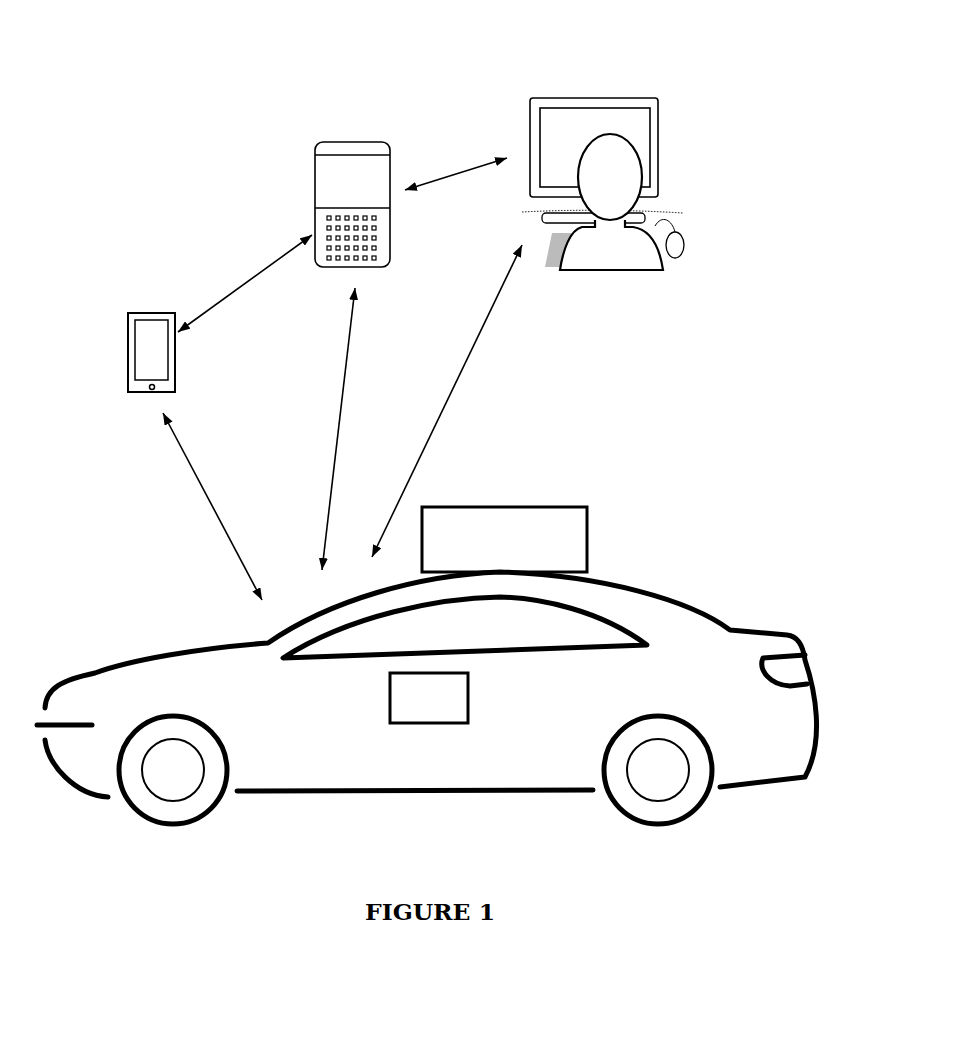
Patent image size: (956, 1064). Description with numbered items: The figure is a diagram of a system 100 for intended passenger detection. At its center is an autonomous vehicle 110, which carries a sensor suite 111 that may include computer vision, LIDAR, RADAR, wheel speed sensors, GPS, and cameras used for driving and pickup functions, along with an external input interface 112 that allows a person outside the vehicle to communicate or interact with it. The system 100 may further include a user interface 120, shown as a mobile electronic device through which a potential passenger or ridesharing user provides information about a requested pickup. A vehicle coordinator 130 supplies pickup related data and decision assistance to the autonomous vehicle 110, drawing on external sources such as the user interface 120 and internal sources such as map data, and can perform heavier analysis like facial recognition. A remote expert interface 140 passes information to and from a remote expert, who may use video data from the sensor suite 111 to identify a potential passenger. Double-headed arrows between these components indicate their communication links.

The system 100 is at (760, 93).
The autonomous vehicle 110 is at (427, 698).
The sensor suite 111 is at (504, 539).
The external input interface 112 is at (429, 698).
The user interface 120 is at (151, 333).
The vehicle coordinator 130 is at (352, 184).
The remote expert interface 140 is at (603, 162).